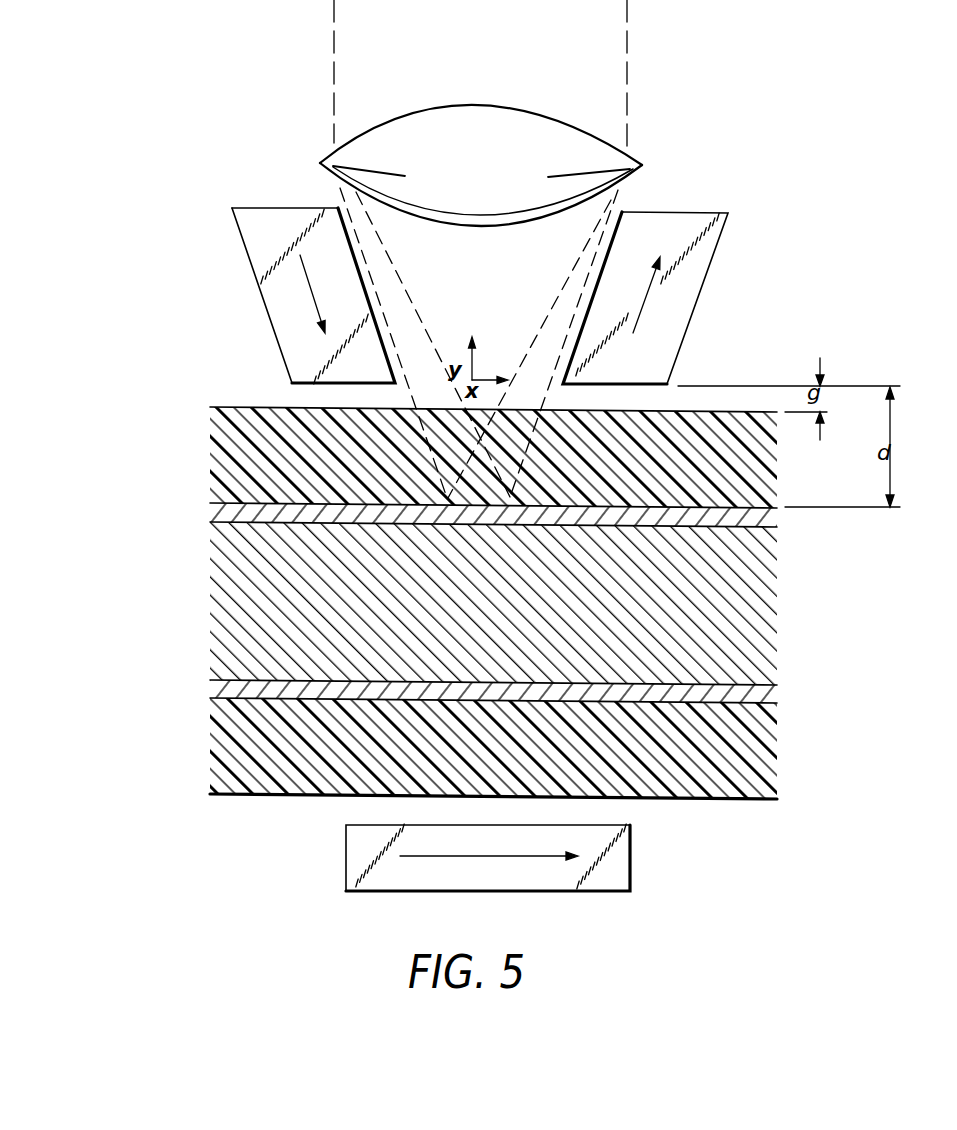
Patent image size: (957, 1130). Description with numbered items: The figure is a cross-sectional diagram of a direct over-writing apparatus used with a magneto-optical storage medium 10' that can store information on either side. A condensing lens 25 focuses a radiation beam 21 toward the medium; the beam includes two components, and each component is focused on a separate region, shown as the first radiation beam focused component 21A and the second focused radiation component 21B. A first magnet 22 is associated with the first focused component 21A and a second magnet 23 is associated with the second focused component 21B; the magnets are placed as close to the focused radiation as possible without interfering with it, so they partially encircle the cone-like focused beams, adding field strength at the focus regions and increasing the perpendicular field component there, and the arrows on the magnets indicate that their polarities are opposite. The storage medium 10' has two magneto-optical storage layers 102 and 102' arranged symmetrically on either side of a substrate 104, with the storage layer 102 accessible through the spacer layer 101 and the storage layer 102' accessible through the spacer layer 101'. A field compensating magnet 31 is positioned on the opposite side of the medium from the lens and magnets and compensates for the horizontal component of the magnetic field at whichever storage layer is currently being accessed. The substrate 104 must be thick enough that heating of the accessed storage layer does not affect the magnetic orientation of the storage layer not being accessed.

The radiation beam 21 is at (334, 75).
The first radiation beam focused component 21A is at (513, 497).
The second focused radiation component 21B is at (447, 498).
The condensing lens 25 is at (452, 104).
The second magnet 23 is at (262, 297).
The first magnet 22 is at (703, 287).
The magneto-optical storage medium 10' is at (409, 603).
The spacer layer 101 is at (456, 457).
The magneto-optical storage layer 102 is at (453, 509).
The substrate 104 is at (209, 625).
The second magneto-optical storage layer 102' is at (453, 686).
The second spacer layer 101' is at (455, 748).
The compensating magnet 31 is at (346, 857).